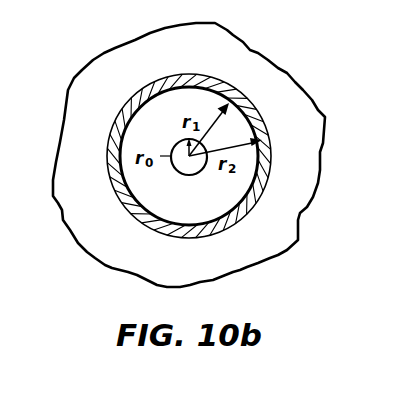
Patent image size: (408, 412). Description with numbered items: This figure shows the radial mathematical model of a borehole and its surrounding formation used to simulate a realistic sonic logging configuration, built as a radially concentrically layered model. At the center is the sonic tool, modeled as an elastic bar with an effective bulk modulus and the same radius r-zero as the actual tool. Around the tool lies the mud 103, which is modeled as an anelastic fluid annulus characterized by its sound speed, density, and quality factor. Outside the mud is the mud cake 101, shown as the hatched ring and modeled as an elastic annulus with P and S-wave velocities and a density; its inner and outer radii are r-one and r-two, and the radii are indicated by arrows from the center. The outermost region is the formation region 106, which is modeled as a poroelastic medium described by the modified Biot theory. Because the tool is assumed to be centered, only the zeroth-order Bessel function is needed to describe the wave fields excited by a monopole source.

The mud cake 101 is at (140, 91).
The formation region 106 is at (170, 68).
The mud 103 is at (209, 211).